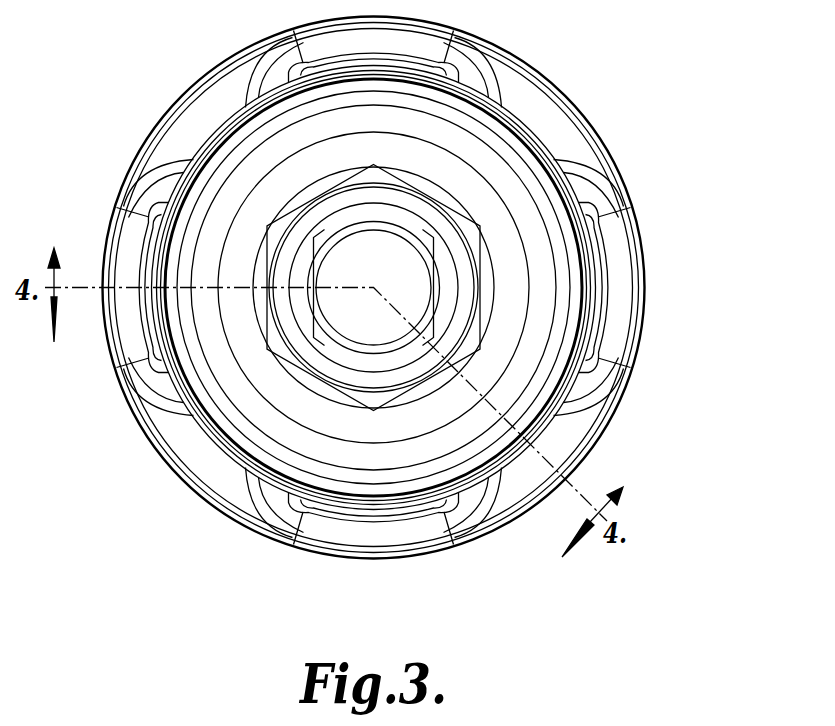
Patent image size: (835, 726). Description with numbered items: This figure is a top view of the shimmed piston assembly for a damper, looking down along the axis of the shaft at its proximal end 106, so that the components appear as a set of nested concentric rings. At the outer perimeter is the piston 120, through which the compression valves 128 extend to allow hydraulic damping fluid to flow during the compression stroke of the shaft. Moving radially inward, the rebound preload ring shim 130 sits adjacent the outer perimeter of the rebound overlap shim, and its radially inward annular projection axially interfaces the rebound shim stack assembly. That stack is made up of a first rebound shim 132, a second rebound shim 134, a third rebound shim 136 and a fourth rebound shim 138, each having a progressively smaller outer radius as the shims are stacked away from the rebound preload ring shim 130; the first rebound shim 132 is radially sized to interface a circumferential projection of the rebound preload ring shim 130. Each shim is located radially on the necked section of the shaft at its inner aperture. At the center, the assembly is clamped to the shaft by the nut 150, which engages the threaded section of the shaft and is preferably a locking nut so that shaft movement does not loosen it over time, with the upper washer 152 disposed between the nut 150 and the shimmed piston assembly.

The proximal end 106 is at (421, 289).
The piston 120 is at (622, 172).
The compression valves 128 is at (605, 320).
The rebound preload ring shim 130 is at (205, 433).
The first rebound shim 132 is at (183, 215).
The second rebound shim 134 is at (215, 178).
The third rebound shim 136 is at (255, 172).
The fourth rebound shim 138 is at (290, 165).
The nut 150 is at (470, 198).
The upper washer 152 is at (416, 178).